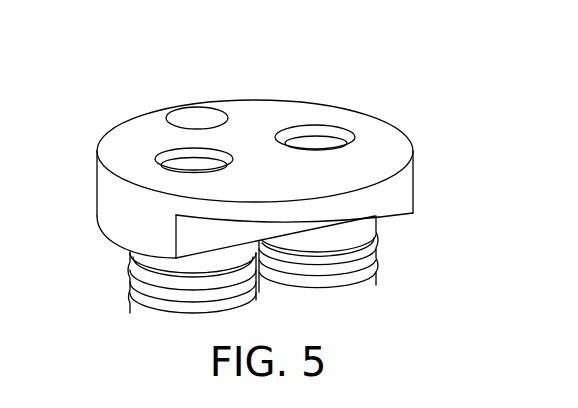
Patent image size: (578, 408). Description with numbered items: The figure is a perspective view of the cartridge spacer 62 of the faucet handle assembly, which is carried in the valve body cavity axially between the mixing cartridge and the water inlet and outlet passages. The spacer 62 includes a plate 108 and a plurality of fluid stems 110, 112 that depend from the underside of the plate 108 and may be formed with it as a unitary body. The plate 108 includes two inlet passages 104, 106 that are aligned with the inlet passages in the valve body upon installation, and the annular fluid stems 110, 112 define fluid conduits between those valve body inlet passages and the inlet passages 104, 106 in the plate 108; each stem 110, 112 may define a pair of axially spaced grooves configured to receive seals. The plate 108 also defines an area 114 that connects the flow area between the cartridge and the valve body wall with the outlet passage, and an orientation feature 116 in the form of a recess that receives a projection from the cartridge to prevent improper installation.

The spacer 62 is at (448, 167).
The inlet passage 104 is at (168, 153).
The inlet passage 106 is at (315, 130).
The plate 108 is at (387, 138).
The fluid stem 110 is at (163, 306).
The fluid stem 112 is at (358, 278).
The area 114 is at (190, 232).
The orientation feature 116 is at (203, 110).